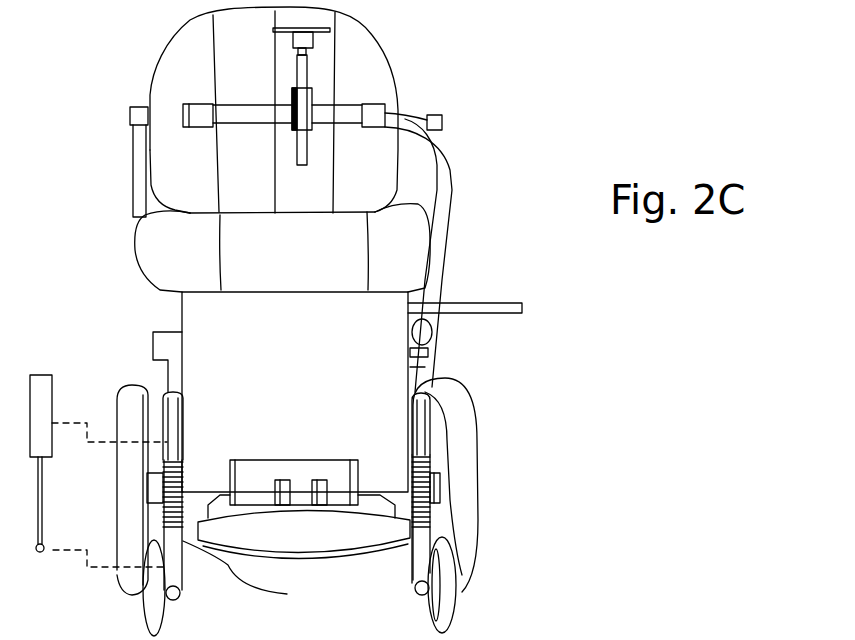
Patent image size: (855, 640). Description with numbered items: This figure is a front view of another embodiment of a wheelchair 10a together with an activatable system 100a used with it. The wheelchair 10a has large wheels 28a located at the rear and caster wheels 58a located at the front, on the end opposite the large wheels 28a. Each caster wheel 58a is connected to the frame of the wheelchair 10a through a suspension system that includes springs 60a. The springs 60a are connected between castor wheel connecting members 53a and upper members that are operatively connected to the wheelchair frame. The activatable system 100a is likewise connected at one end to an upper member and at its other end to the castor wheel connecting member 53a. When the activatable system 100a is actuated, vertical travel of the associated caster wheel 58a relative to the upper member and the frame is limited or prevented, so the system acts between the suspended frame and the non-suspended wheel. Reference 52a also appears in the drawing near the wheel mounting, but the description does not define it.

The wheelchair 10a is at (398, 59).
The large wheels 28a is at (117, 425).
The wheel support arm 52a is at (167, 405).
The castor wheel connecting members 53a is at (410, 540).
The caster wheels 58a is at (142, 607).
The springs 60a is at (143, 500).
The activatable system 100a is at (433, 448).